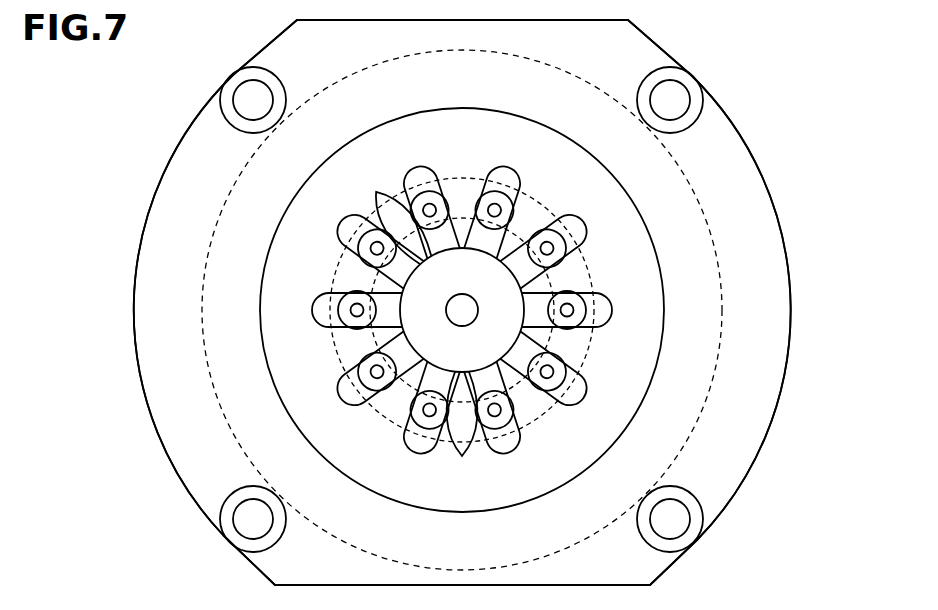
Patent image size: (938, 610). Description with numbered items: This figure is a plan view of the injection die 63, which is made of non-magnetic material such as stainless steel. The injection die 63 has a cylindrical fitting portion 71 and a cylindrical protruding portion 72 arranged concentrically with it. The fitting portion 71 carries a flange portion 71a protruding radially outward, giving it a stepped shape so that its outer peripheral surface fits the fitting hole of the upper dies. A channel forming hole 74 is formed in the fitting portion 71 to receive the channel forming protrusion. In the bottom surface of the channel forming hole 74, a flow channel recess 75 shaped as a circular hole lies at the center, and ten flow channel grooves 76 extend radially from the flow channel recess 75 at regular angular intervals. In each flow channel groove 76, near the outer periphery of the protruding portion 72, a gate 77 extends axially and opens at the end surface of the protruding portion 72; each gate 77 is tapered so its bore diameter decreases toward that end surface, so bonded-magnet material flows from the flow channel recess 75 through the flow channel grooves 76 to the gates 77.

The injection die 63 is at (761, 65).
The fitting portion 71 is at (686, 172).
The flange portion 71a is at (784, 246).
The protruding portion 72 is at (583, 257).
The channel forming hole 74 is at (661, 293).
The flow channel recess 75 is at (402, 328).
The flow channel groove 76 is at (519, 176).
The gate 77 is at (380, 185).